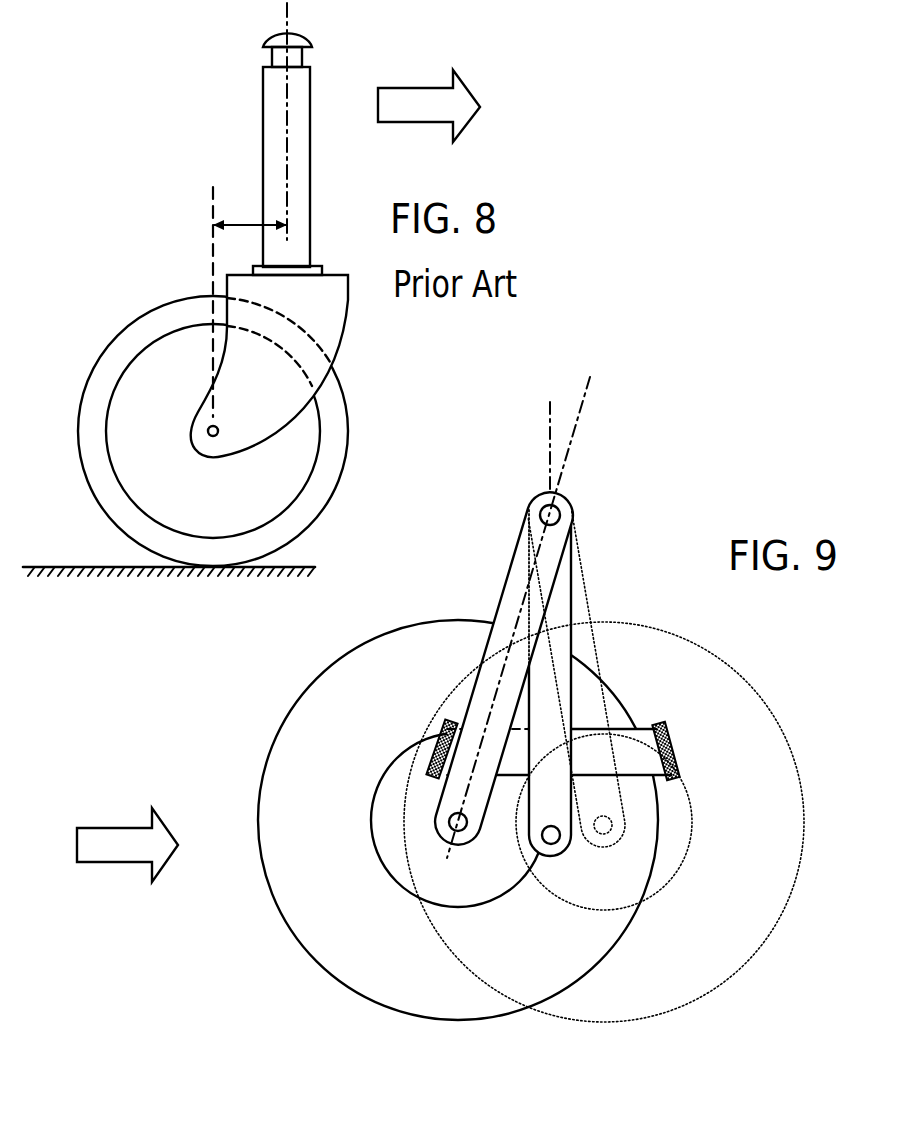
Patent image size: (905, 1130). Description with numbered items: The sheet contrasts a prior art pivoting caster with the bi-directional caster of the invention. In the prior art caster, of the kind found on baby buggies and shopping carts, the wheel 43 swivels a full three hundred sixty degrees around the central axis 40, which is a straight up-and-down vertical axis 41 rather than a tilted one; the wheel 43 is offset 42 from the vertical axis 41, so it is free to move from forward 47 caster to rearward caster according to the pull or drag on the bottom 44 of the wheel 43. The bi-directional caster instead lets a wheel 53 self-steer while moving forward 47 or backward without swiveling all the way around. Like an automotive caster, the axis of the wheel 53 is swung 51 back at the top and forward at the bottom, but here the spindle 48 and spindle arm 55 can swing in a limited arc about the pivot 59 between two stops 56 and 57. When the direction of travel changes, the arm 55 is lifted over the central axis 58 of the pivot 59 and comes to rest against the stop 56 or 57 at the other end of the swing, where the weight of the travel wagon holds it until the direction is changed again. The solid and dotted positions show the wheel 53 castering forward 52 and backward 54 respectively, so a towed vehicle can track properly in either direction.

In FIG. 8, the central axis 40 is at (287, 137).
In FIG. 8, the vertical axis 41 is at (263, 133).
In FIG. 8, the offset 42 is at (240, 225).
In FIG. 8, the wheel 43 is at (352, 432).
In FIG. 8, the bottom of the wheel 44 is at (218, 570).
In FIG. 8, the forward direction 47 is at (420, 122).
In FIG. 9, the forward direction 47 is at (120, 863).
In FIG. 8, the spindle 48 is at (207, 428).
In FIG. 9, the spindle 48 is at (455, 823).
In FIG. 9, the swinging of the vertical axis 51 is at (582, 436).
In FIG. 9, the forward caster position 52 is at (473, 1017).
In FIG. 9, the wheel 53 is at (260, 827).
In FIG. 9, the backward caster position 54 is at (583, 1022).
In FIG. 9, the spindle arm 55 is at (497, 598).
In FIG. 9, the stop 56 is at (442, 750).
In FIG. 9, the stop 57 is at (673, 753).
In FIG. 9, the central axis of the pivot 58 is at (547, 433).
In FIG. 9, the pivot 59 is at (558, 517).